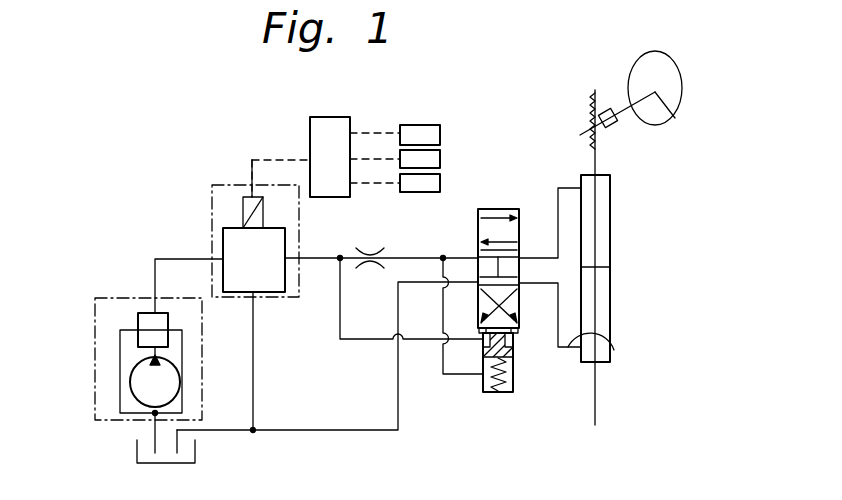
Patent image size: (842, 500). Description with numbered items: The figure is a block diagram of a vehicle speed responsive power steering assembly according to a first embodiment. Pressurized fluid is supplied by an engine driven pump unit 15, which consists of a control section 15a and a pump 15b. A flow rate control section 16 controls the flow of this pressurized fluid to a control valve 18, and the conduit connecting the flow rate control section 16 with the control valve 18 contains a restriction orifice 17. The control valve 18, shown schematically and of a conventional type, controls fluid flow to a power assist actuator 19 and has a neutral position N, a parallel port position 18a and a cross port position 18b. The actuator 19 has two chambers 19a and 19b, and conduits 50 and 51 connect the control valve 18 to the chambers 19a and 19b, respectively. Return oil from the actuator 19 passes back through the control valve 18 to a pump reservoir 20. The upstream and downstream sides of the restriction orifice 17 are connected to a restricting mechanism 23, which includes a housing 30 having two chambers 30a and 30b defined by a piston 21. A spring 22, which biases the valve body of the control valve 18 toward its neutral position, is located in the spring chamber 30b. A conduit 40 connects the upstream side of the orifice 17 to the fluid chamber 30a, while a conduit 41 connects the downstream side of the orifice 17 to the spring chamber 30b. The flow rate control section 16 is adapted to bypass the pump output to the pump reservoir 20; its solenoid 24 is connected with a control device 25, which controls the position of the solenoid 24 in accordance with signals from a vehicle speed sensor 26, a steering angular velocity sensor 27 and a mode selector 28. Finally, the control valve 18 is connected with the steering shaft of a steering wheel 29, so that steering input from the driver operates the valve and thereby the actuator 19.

The engine driven pump unit 15 is at (94, 308).
The control section 15a is at (168, 330).
The pump 15b is at (180, 380).
The flow rate control section 16 is at (278, 293).
The restriction orifice 17 is at (370, 247).
The control valve 18 is at (508, 208).
The parallel port position 18a is at (520, 222).
The cross port position 18b is at (520, 301).
The neutral position N is at (519, 270).
The power assist actuator 19 is at (610, 218).
The chamber 19a is at (610, 190).
The chamber 19b is at (610, 315).
The pump reservoir 20 is at (195, 448).
The piston 21 is at (513, 352).
The spring 22 is at (513, 387).
The restricting mechanism 23 is at (511, 394).
The solenoid 24 is at (243, 210).
The control device 25 is at (330, 157).
The vehicle speed sensor 26 is at (440, 135).
The steering angular velocity sensor 27 is at (440, 160).
The mode selector 28 is at (440, 184).
The steering wheel 29 is at (672, 126).
The housing 30 is at (483, 392).
The fluid chamber 30a is at (512, 336).
The spring chamber 30b is at (513, 372).
The conduit 40 is at (368, 340).
The conduit 41 is at (443, 369).
The conduit 50 is at (572, 188).
The conduit 51 is at (614, 350).